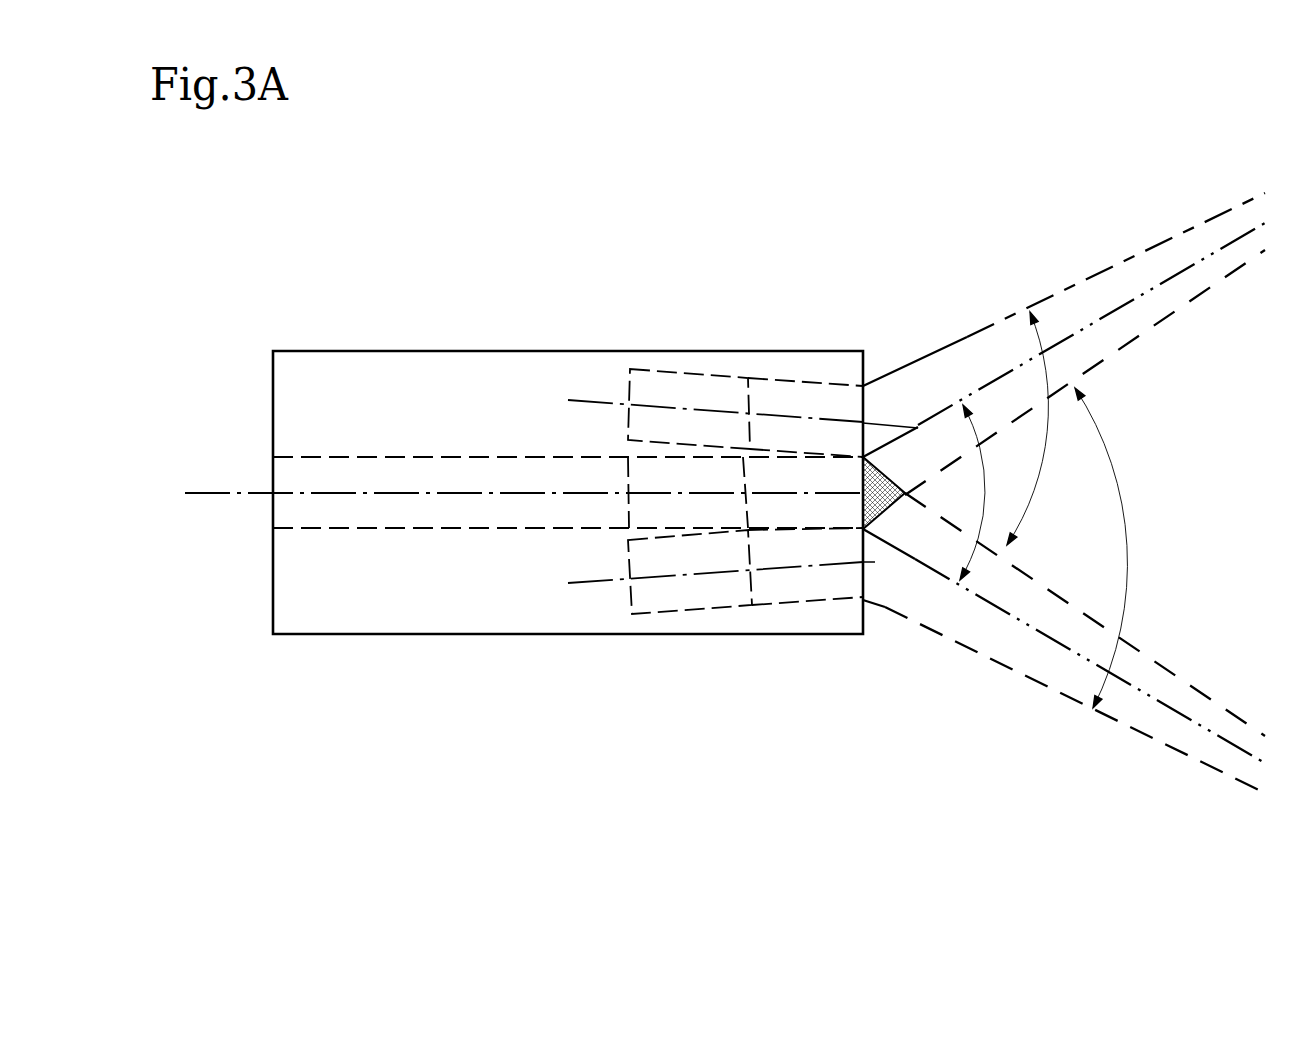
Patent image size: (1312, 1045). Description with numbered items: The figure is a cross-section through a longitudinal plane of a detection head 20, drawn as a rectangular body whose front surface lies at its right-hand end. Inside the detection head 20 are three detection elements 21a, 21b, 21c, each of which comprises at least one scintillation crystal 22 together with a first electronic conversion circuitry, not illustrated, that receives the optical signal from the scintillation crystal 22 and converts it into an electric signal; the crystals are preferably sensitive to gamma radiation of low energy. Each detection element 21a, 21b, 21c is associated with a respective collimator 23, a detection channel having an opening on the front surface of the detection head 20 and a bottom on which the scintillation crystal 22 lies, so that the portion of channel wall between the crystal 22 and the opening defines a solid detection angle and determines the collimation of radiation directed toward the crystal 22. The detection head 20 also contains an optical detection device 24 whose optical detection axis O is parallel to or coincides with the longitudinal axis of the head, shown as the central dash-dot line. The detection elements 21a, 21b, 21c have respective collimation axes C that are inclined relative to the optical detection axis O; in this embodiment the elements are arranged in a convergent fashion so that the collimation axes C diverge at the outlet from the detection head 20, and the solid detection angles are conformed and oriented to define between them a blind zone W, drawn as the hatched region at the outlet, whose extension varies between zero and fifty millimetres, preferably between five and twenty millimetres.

The detection head 20 is at (433, 335).
The detection element 21a is at (731, 368).
The detection element 21b is at (730, 614).
The detection element 21c is at (618, 470).
The scintillation crystal 22 is at (621, 497).
The collimator 23 is at (787, 383).
The optical detection device 24 is at (428, 530).
The collimation axis C is at (593, 397).
The optical detection axis O is at (212, 492).
The blind zone W is at (873, 505).